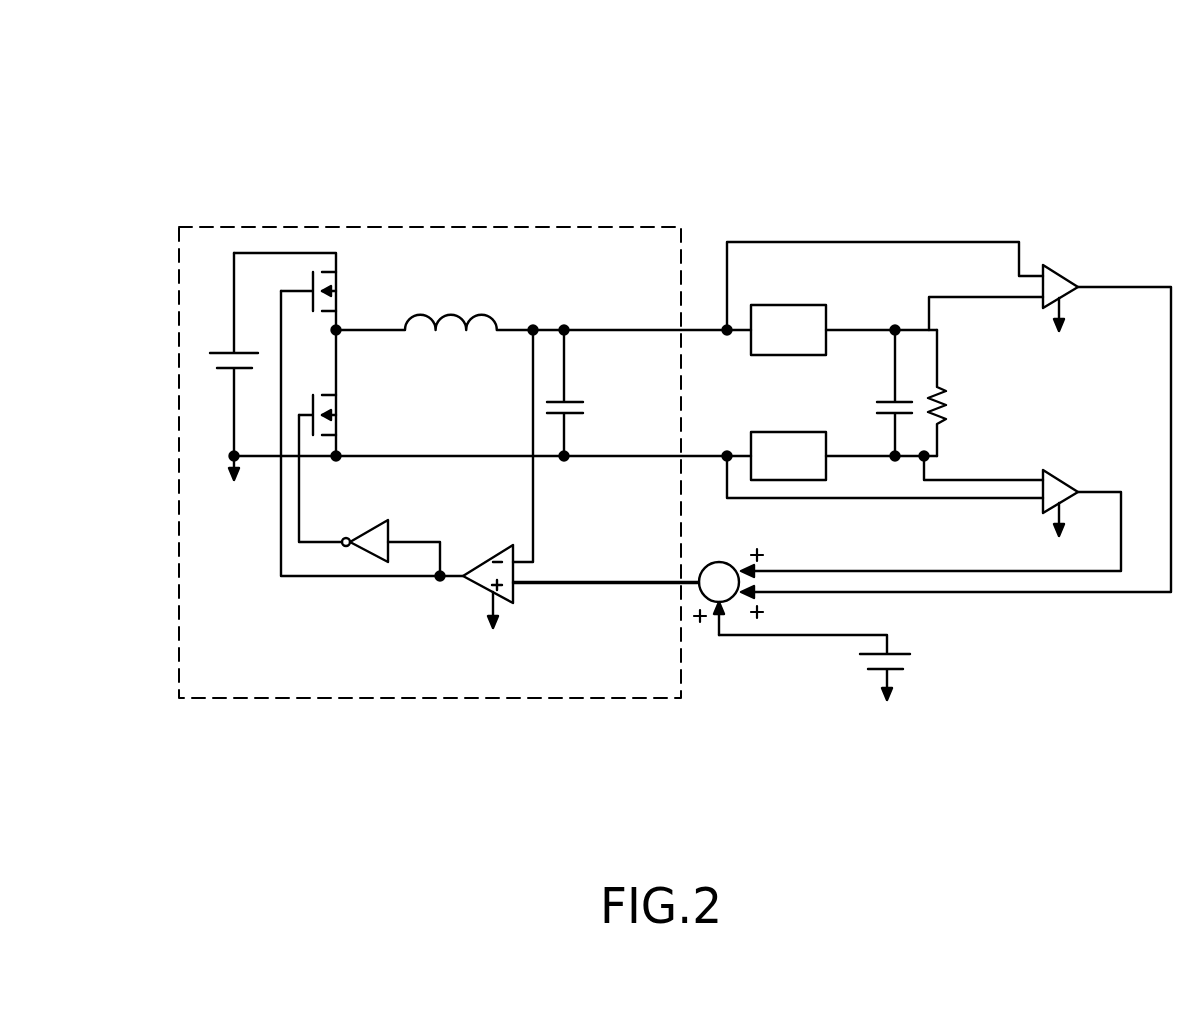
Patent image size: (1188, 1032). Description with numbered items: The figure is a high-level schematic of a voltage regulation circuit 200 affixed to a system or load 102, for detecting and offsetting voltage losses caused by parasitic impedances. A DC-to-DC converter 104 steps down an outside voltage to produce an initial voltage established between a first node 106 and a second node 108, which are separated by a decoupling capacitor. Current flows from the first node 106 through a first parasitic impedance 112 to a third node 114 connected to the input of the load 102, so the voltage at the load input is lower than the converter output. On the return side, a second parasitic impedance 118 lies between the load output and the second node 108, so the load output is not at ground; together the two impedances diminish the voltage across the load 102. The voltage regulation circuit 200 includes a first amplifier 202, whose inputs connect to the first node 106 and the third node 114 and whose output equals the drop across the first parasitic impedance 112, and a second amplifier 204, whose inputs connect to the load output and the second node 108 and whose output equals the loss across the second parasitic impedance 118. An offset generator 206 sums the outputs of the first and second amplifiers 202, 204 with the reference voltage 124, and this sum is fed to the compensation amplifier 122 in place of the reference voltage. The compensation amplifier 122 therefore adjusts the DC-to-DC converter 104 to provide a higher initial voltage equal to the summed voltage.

The load 102 is at (948, 408).
The DC-to-DC converter 104 is at (399, 227).
The first node 106 is at (564, 330).
The second node 108 is at (564, 456).
The first parasitic impedance 112 is at (777, 305).
The third node 114 is at (895, 330).
The second parasitic impedance 118 is at (793, 432).
The compensation amplifier 122 is at (510, 598).
The reference voltage 124 is at (898, 671).
The voltage regulation circuit 200 is at (878, 137).
The first amplifier 202 is at (1060, 282).
The second amplifier 204 is at (1062, 490).
The offset generator 206 is at (722, 562).